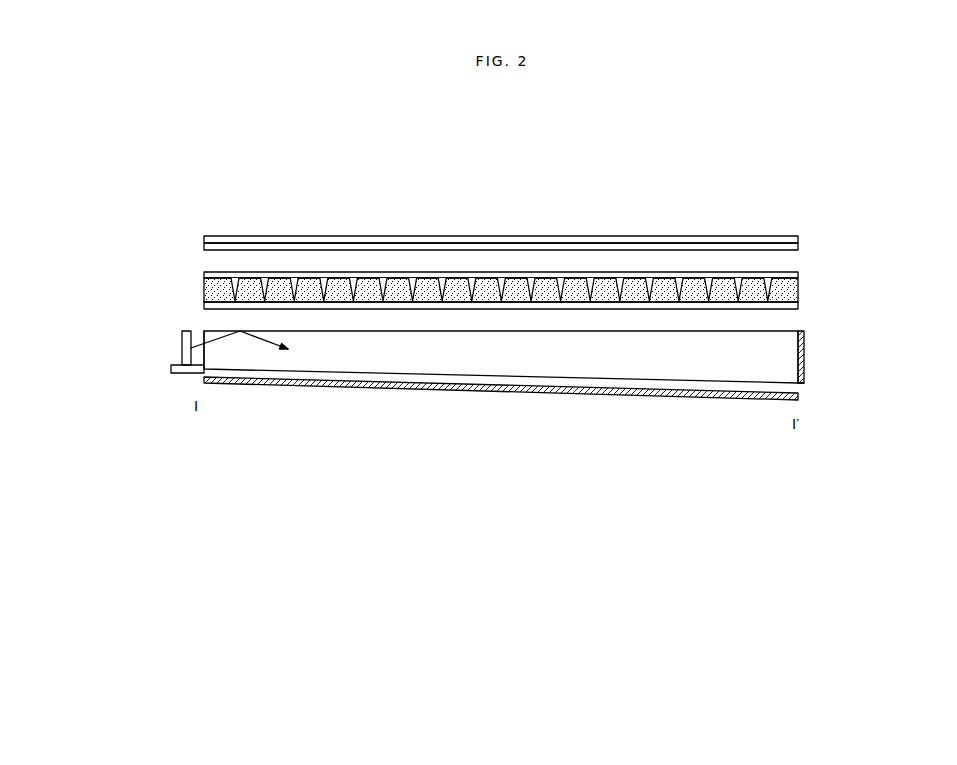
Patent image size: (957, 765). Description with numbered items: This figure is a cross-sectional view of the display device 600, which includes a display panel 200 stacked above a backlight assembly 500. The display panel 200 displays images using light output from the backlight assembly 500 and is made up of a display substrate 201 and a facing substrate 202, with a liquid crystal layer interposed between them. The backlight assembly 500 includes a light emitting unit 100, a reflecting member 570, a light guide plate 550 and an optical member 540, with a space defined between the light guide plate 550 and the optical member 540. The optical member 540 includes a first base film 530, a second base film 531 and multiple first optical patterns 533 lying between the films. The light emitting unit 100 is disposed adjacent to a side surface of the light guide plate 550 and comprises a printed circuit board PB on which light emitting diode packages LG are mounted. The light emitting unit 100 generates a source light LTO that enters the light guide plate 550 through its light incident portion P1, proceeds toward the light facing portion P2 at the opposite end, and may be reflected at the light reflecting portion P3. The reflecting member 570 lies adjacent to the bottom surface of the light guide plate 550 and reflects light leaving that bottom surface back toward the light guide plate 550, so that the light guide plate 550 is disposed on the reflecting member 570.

The display device 600 is at (690, 205).
The display panel 200 is at (547, 241).
The facing substrate 202 is at (799, 239).
The display substrate 201 is at (799, 245).
The optical member 540 is at (547, 291).
The second base film 531 is at (799, 274).
The first optical patterns 533 is at (799, 290).
The first base film 530 is at (799, 305).
The backlight assembly 500 is at (556, 361).
The light guide plate 550 is at (380, 362).
The reflecting member 570 is at (799, 397).
The light incident portion P1 is at (198, 343).
The light facing portion P2 is at (793, 354).
The light reflecting portion P3 is at (805, 367).
The source light LTO is at (260, 338).
The light emitting unit 100 is at (146, 354).
The light emitting diode packages LG is at (187, 347).
The printed circuit board PB is at (177, 369).